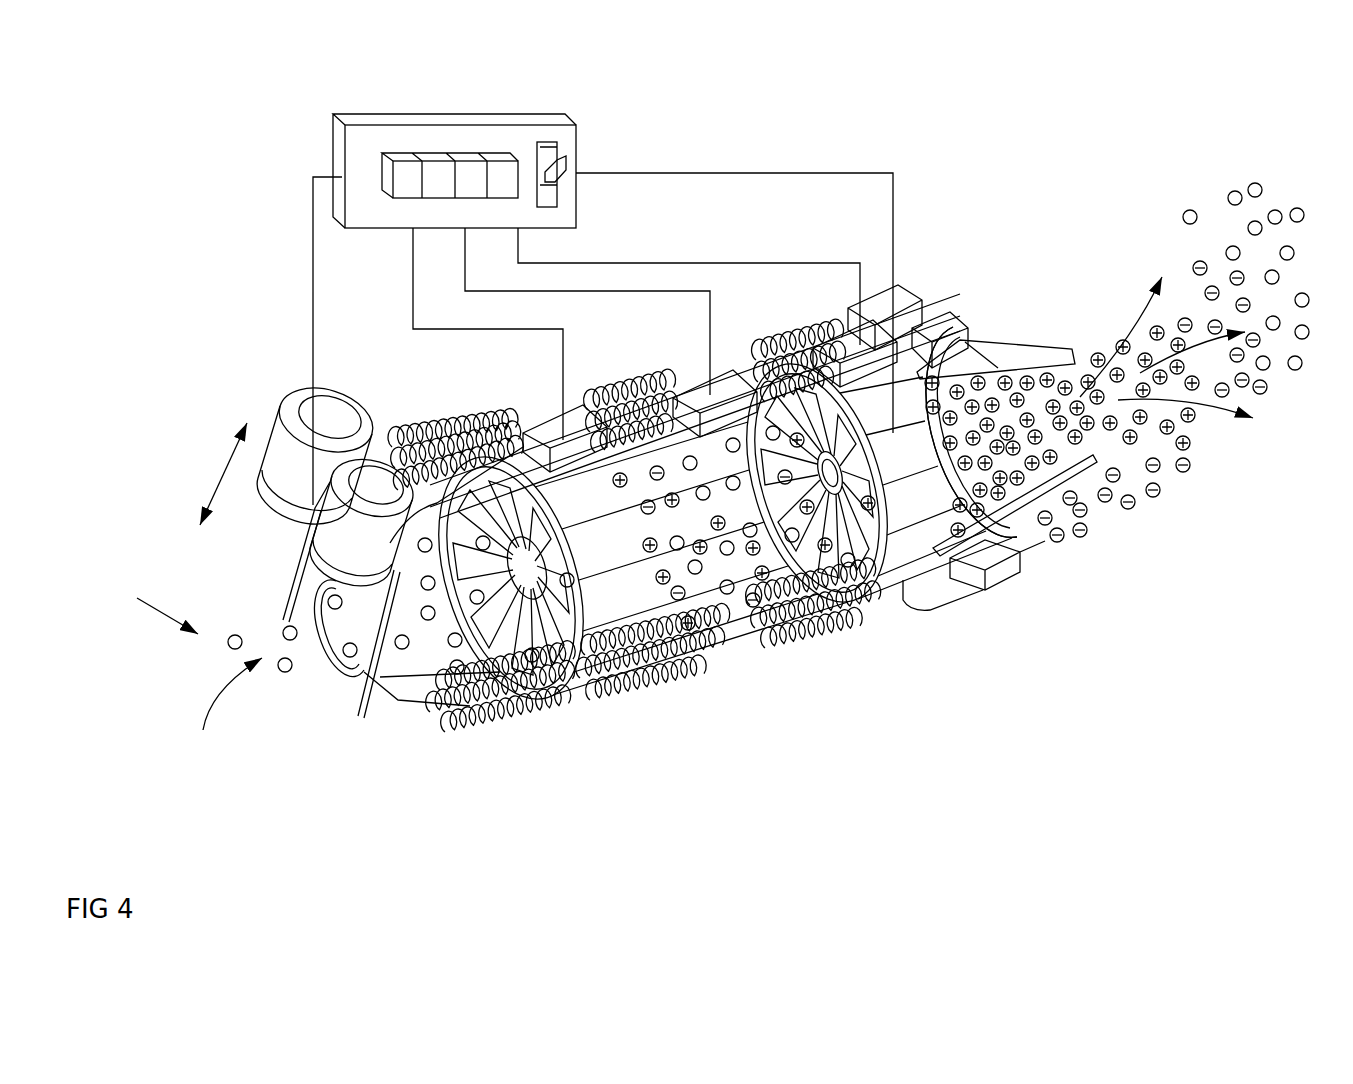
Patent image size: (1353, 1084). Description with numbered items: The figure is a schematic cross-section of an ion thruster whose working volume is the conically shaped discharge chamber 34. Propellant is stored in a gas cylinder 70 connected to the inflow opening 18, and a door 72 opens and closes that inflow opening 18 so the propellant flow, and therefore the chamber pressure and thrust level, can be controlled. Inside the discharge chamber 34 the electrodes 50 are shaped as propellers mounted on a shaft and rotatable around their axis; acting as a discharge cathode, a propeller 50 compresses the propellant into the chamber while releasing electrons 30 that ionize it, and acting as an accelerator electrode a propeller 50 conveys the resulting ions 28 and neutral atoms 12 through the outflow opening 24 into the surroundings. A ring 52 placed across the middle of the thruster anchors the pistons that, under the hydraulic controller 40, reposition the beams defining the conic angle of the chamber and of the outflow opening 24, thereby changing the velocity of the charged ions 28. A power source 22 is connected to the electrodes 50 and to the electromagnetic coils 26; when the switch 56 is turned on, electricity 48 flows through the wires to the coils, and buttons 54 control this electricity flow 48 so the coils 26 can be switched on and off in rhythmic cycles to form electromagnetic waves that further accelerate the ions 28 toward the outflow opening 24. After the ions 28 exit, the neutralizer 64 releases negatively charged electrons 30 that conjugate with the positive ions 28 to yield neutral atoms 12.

The neutral atoms 12 is at (1185, 216).
The inflow opening 18 is at (318, 660).
The power source 22 is at (447, 195).
The outflow opening 24 is at (1125, 403).
The electromagnetic coils 26 is at (520, 740).
The ions 28 is at (1048, 377).
The electrons 30 is at (755, 600).
The discharge chamber 34 is at (1017, 347).
The hydraulic controller 40 is at (912, 310).
The electricity flow 48 is at (275, 275).
The propeller electrodes 50 is at (588, 690).
The ring 52 is at (312, 618).
The buttons 54 is at (405, 192).
The switch 56 is at (558, 157).
The neutralizer 64 is at (1025, 548).
The gas cylinder 70 is at (290, 448).
The door 72 is at (345, 623).